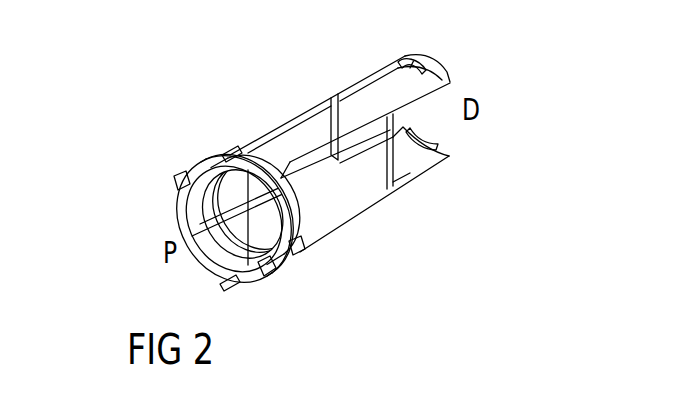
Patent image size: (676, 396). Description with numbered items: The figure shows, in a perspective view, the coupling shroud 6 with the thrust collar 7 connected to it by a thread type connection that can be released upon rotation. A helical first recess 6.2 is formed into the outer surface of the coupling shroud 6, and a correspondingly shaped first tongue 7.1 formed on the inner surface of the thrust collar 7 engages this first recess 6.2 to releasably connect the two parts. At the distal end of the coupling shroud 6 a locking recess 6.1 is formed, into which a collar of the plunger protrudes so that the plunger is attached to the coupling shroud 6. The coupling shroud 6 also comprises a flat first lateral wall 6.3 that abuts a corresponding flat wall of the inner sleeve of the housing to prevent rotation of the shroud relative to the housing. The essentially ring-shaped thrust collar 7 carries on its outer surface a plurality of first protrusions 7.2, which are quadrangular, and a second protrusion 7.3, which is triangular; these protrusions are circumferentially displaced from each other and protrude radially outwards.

The coupling shroud 6 is at (315, 123).
The locking recess 6.1 is at (413, 72).
The first recess 6.2 is at (339, 249).
The first lateral wall 6.3 is at (343, 193).
The thrust collar 7 is at (247, 156).
The first tongue 7.1 is at (254, 275).
The first protrusions 7.2 is at (225, 154).
The second protrusion 7.3 is at (176, 188).